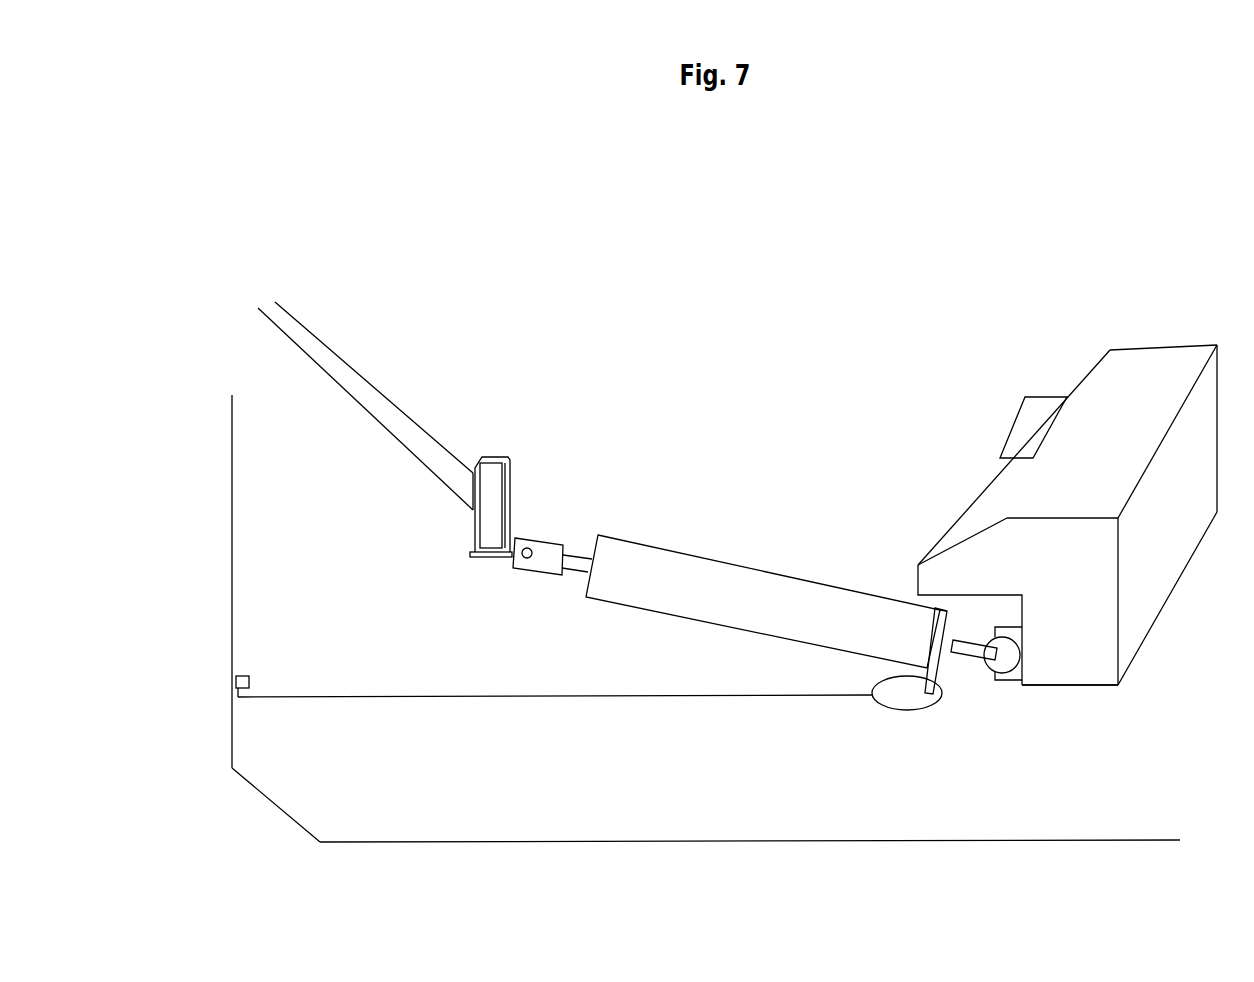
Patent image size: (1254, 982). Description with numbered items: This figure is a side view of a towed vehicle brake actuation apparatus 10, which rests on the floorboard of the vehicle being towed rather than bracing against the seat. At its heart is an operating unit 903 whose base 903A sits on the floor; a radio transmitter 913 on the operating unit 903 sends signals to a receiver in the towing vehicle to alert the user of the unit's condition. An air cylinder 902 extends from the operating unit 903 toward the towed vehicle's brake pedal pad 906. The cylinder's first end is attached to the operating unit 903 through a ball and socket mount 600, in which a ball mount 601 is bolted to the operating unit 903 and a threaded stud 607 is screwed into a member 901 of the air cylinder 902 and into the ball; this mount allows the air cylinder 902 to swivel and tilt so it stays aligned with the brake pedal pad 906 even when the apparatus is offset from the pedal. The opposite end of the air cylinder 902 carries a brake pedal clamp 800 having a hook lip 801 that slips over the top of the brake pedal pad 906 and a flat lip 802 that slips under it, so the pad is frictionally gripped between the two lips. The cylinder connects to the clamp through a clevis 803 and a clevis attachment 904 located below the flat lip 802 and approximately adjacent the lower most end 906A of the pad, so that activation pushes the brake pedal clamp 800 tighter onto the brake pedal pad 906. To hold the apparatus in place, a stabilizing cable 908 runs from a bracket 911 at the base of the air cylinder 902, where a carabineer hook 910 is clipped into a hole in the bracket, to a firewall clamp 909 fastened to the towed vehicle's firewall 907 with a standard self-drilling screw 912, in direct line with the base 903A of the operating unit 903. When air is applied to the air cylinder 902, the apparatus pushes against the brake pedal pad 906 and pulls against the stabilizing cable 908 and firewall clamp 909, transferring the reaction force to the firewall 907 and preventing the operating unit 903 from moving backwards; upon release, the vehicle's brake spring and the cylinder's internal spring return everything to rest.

The towed vehicle brake actuation apparatus 10 is at (937, 223).
The brake pedal pad 906 is at (490, 470).
The lower most end of the brake pad 906A is at (487, 556).
The brake pedal clamp 800 is at (513, 488).
The hook lip 801 is at (493, 452).
The flat lip 802 is at (470, 553).
The clevis 803 is at (512, 560).
The clevis attachment 904 is at (522, 572).
The air cylinder 902 is at (725, 563).
The member of the cylinder 901 is at (958, 633).
The threaded stud 607 is at (977, 643).
The ball and socket mount 600 is at (1022, 638).
The ball mount 601 is at (1010, 685).
The bracket 911 is at (938, 665).
The carabineer hook 910 is at (907, 710).
The stabilizing cable 908 is at (573, 698).
The firewall clamp 909 is at (243, 677).
The self-drilling screw 912 is at (250, 681).
The firewall 907 is at (232, 733).
The operating unit 903 is at (1158, 348).
The radio transmitter 913 is at (1046, 397).
The base of the control unit 903A is at (1078, 688).